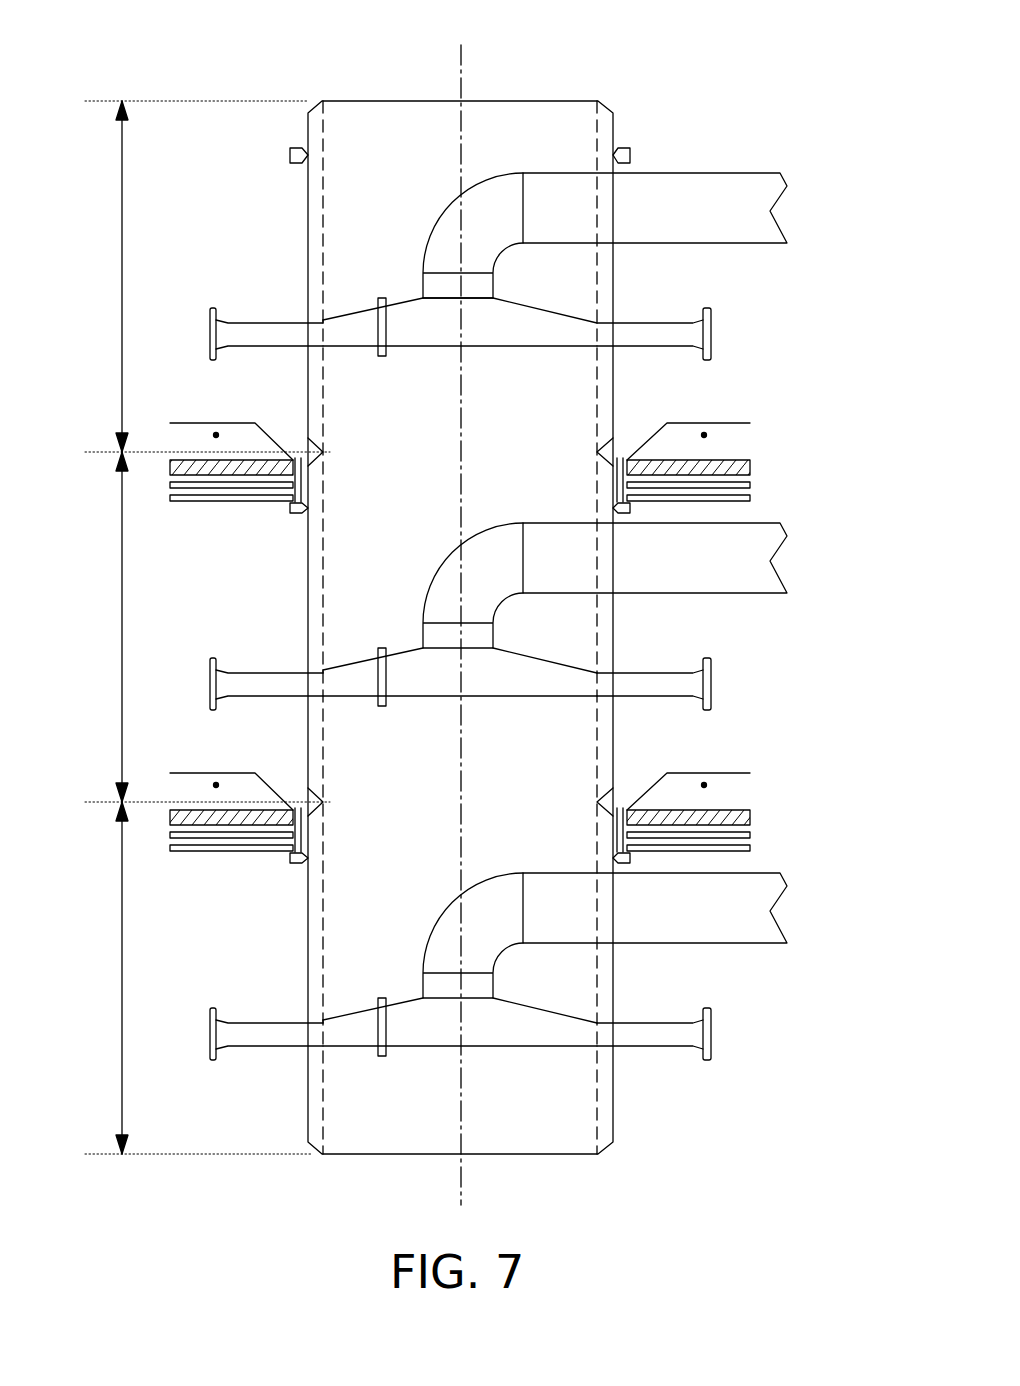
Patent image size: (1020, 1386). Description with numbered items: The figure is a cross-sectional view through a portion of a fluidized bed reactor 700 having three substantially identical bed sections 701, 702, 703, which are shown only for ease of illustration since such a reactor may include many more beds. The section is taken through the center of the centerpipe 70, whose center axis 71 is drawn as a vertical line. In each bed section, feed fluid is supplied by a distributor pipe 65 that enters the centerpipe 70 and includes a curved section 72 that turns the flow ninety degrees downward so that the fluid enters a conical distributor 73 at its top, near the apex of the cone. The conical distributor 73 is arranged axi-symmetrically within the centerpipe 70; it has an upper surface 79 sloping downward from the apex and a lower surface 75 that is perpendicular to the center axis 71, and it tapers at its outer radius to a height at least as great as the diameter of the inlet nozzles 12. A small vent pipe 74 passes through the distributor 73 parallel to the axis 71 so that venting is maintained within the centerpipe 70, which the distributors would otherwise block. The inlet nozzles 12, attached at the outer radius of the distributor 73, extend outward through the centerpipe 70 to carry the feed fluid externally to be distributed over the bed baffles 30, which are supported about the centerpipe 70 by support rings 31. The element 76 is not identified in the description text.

The fluidized bed reactor 700 is at (716, 44).
The centerpipe 70 is at (308, 198).
The center axis 71 is at (462, 1188).
The curved section 72 is at (509, 180).
The conical distributor 73 is at (483, 308).
The vent pipe 74 is at (378, 297).
The lower surface 75 is at (345, 349).
The inlet section of venturi 76 is at (358, 325).
The upper surface 79 is at (402, 298).
The inlet nozzle 12 is at (284, 323).
The bed baffle 30 is at (743, 460).
The support ring 31 is at (290, 150).
The distributor pipe 65 is at (765, 173).
The bed section 701 is at (122, 973).
The bed section 702 is at (122, 623).
The bed section 703 is at (122, 273).